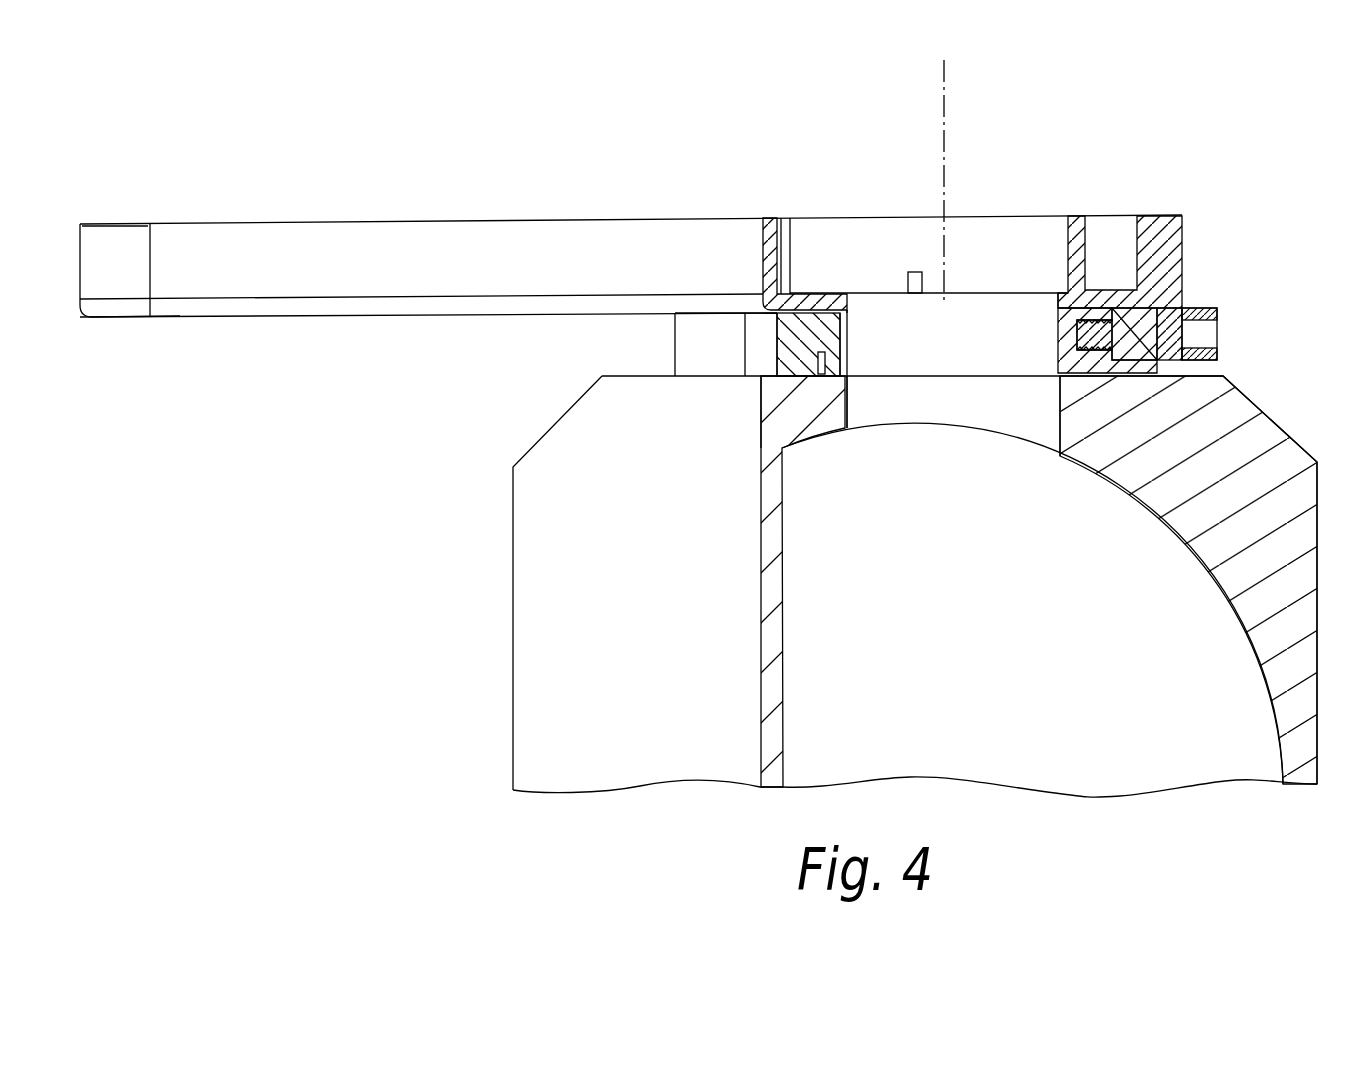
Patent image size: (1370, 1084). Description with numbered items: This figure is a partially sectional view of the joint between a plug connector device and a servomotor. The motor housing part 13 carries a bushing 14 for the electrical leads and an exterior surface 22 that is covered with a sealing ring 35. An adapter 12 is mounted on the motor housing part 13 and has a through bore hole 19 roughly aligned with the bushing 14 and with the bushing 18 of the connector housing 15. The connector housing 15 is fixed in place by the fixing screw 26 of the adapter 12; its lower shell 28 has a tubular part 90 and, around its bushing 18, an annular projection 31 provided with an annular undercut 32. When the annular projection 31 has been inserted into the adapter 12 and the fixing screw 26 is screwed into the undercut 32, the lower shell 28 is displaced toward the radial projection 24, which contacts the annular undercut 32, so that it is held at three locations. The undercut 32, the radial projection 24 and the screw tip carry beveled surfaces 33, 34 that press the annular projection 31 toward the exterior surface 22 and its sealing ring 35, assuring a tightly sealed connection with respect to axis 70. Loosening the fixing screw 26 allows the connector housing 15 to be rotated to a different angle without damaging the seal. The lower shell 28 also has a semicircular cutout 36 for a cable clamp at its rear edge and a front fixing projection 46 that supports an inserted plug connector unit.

The adapter 12 is at (773, 343).
The motor housing part 13 is at (512, 537).
The bushing 14 is at (1062, 455).
The connector housing 15 is at (370, 216).
The bushing 18 is at (1068, 245).
The through bore hole 19 is at (758, 378).
The exterior surface 22 is at (1212, 368).
The radial projection 24 is at (822, 330).
The fixing screw 26 is at (1215, 332).
The lower shell 28 is at (180, 318).
The annular projection 31 is at (1062, 318).
The annular undercut 32 is at (1082, 338).
The beveled surface 33 is at (857, 360).
The beveled surface 34 is at (1060, 378).
The sealing ring 35 is at (828, 375).
The semicircular cutout 36 is at (113, 242).
The front fixing projection 46 is at (918, 272).
The axis 70 is at (946, 78).
The tubular part 90 is at (850, 317).